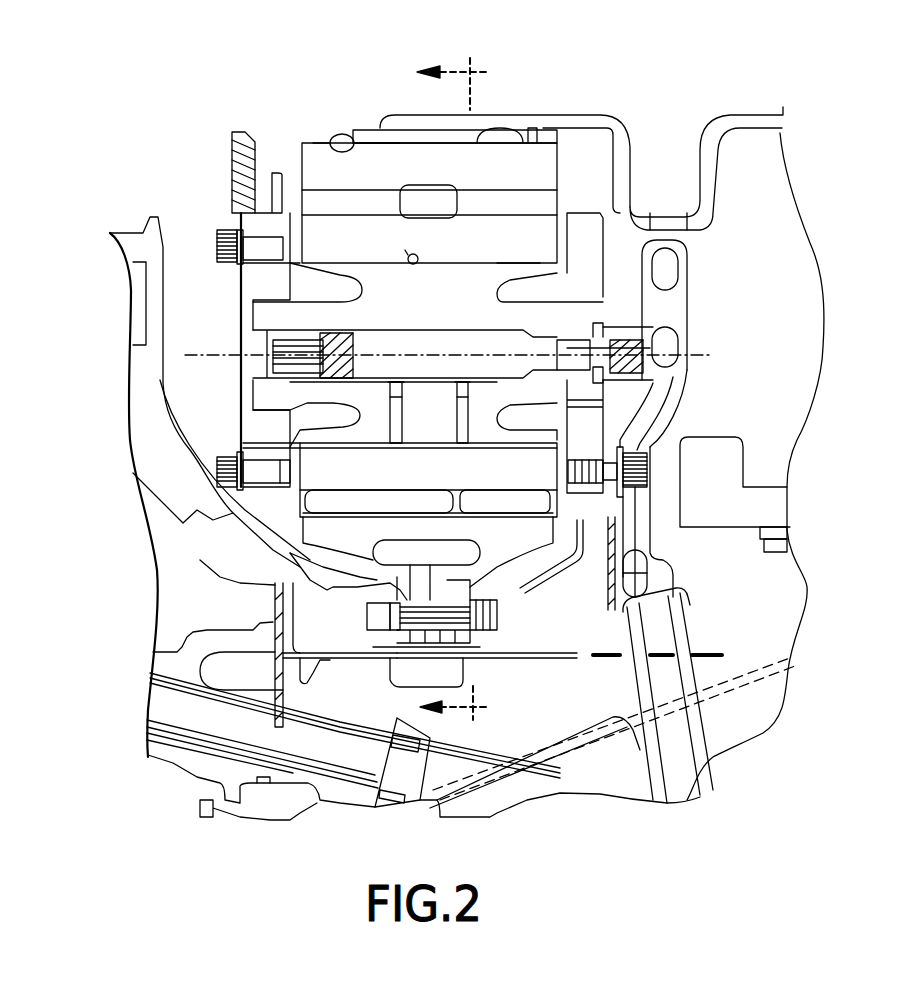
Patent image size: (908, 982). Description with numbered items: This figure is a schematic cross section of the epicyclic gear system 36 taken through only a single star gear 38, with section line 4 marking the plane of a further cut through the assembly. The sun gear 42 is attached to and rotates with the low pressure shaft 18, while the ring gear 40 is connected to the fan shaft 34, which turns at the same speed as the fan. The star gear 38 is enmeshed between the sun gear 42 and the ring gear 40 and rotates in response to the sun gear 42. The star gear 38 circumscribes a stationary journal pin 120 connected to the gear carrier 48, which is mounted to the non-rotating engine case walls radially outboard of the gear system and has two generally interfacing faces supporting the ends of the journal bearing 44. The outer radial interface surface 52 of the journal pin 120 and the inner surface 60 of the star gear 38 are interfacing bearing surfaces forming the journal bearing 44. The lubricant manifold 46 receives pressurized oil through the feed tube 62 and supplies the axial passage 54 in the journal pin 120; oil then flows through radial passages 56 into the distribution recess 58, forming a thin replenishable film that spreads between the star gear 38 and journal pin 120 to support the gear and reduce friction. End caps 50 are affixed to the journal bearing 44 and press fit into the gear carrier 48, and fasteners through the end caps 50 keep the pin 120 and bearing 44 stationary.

The section line 4- 4 is at (462, 390).
The low pressure shaft 18 is at (737, 116).
The fan shaft 34 is at (136, 232).
The epicyclic gear system 36 is at (240, 107).
The star gear 38 is at (544, 251).
The ring gear 40 is at (497, 547).
The sun gear 42 is at (328, 167).
The journal bearing 44 is at (442, 316).
The lubricant manifold 46 is at (687, 330).
The gear carrier 48 is at (270, 230).
The end caps 50 is at (270, 280).
The interface surface 52 is at (405, 258).
The axial passage 54 is at (334, 370).
The radial passages 56 is at (398, 425).
The distribution recess 58 is at (478, 443).
The inner surface 60 is at (500, 262).
The feed tube 62 is at (710, 720).
The journal pin 120 is at (303, 247).